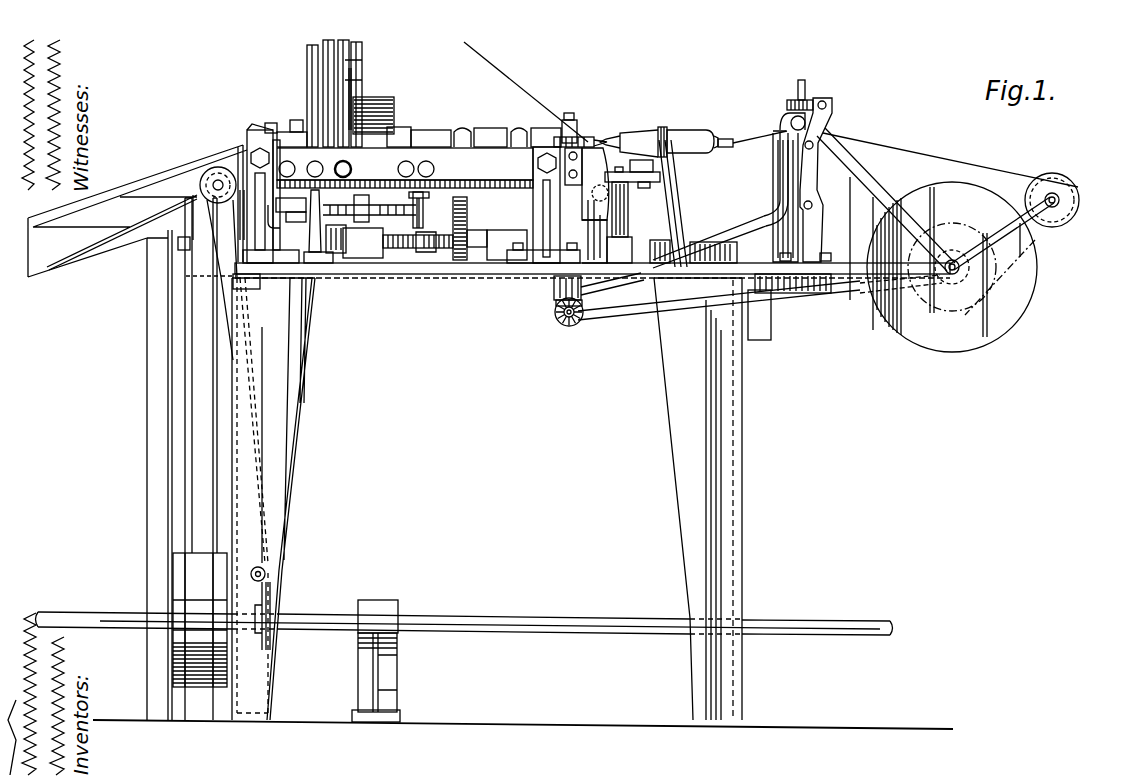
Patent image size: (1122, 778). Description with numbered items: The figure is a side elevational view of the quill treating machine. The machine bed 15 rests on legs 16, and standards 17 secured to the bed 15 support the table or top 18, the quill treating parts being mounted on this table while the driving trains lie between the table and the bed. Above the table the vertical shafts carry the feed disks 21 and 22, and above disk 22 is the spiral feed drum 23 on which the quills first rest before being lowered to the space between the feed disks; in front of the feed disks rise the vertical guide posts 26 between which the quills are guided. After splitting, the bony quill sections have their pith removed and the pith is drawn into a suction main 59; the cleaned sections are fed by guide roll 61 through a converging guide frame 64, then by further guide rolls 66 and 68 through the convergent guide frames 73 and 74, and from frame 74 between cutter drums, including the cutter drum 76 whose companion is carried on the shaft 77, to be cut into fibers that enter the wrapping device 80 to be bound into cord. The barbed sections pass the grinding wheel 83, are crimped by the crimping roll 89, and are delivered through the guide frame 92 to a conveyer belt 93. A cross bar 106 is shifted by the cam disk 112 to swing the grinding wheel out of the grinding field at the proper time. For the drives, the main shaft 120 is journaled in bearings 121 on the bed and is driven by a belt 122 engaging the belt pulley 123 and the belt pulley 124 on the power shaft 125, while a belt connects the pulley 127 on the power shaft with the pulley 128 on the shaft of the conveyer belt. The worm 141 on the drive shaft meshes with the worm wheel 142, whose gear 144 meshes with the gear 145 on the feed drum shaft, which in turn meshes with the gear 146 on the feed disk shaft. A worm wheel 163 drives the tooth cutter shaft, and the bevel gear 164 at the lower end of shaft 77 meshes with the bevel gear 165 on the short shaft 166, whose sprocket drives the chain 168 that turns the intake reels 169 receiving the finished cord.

The machine bed 15 is at (393, 275).
The legs 16 is at (297, 417).
The standards 17 is at (276, 264).
The table or top 18 is at (504, 148).
The feed disk 21 is at (292, 135).
The feed disk 22 is at (398, 127).
The feed drum 23 is at (384, 108).
The vertical guide posts 26 is at (363, 50).
The suction main 59 is at (362, 70).
The guide roll 61 is at (414, 130).
The converging guide frame 64 is at (442, 138).
The guide roll 66 is at (468, 130).
The guide roll 68 is at (521, 135).
The convergent guide frame 73 is at (494, 138).
The convergent guide frame 74 is at (548, 128).
The cutter drum 76 is at (586, 142).
The shaft 77 is at (553, 292).
The wrapping device 80 is at (648, 138).
The grinding wheel 83 is at (297, 120).
The crimping roll 89 is at (269, 124).
The guide frame 92 is at (252, 130).
The conveyer belt 93 is at (119, 197).
The cross bar 106 is at (318, 167).
The cam disk 112 is at (295, 178).
The main shaft 120 is at (697, 240).
The bearings 121 is at (500, 242).
The belt 122 is at (190, 403).
The belt pulley 123 is at (187, 273).
The belt pulley 124 is at (178, 662).
The power shaft 125 is at (604, 636).
The pulley 127 is at (278, 602).
The pulley 128 is at (213, 173).
The worm 141 is at (406, 278).
The worm wheel 142 is at (421, 268).
The gear 144 is at (405, 164).
The gear 145 is at (358, 185).
The gear 146 is at (284, 168).
The worm wheel 163 is at (410, 190).
The bevel gear 164 is at (556, 303).
The bevel gear 165 is at (558, 320).
The short shaft 166 is at (565, 328).
The chain 168 is at (636, 316).
The intake reels 169 is at (1012, 307).